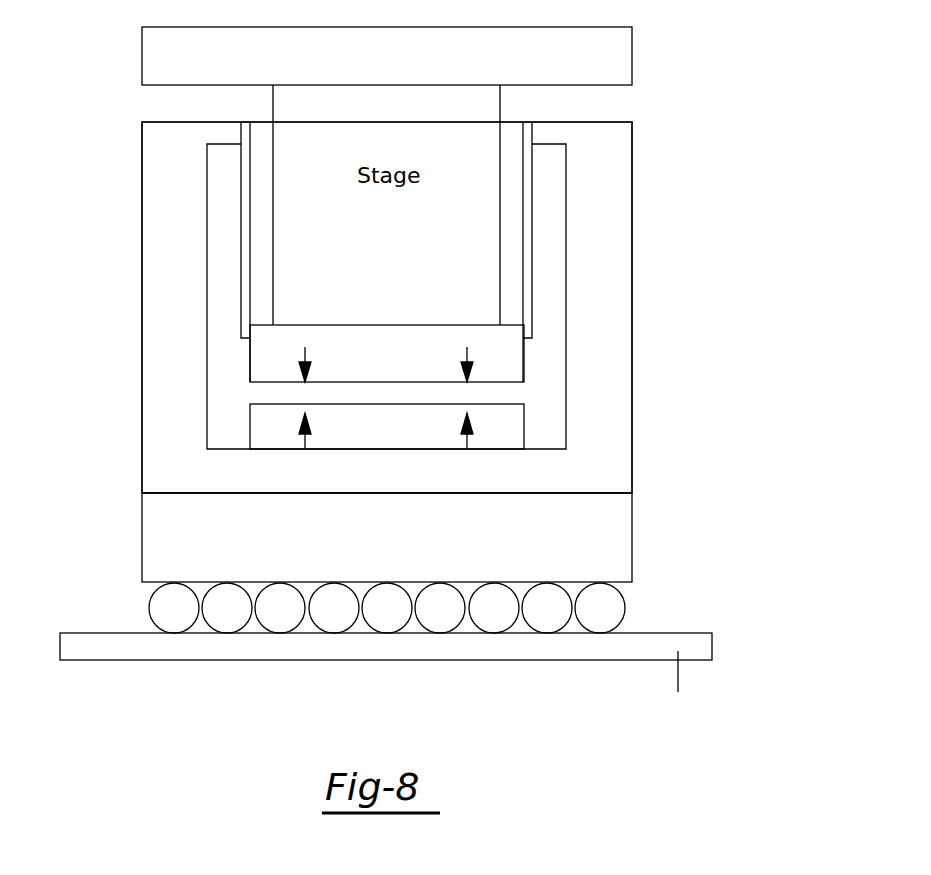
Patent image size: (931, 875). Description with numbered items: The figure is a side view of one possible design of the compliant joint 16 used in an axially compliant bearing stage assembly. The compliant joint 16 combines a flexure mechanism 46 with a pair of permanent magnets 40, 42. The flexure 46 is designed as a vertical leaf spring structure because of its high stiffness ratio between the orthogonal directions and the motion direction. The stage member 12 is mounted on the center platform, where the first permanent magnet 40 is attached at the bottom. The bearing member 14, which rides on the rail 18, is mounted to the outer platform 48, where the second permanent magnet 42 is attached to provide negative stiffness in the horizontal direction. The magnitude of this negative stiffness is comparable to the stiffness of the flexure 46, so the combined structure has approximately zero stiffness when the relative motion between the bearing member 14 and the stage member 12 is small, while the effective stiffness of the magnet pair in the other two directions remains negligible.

The stage member 12 is at (632, 59).
The bearing member 14 is at (625, 538).
The compliant joint 16 is at (753, 322).
The rail 18 is at (90, 656).
The permanent magnet 40 is at (524, 364).
The permanent magnet 42 is at (524, 431).
The flexure mechanism 46 is at (529, 229).
The outer platform 48 is at (632, 283).